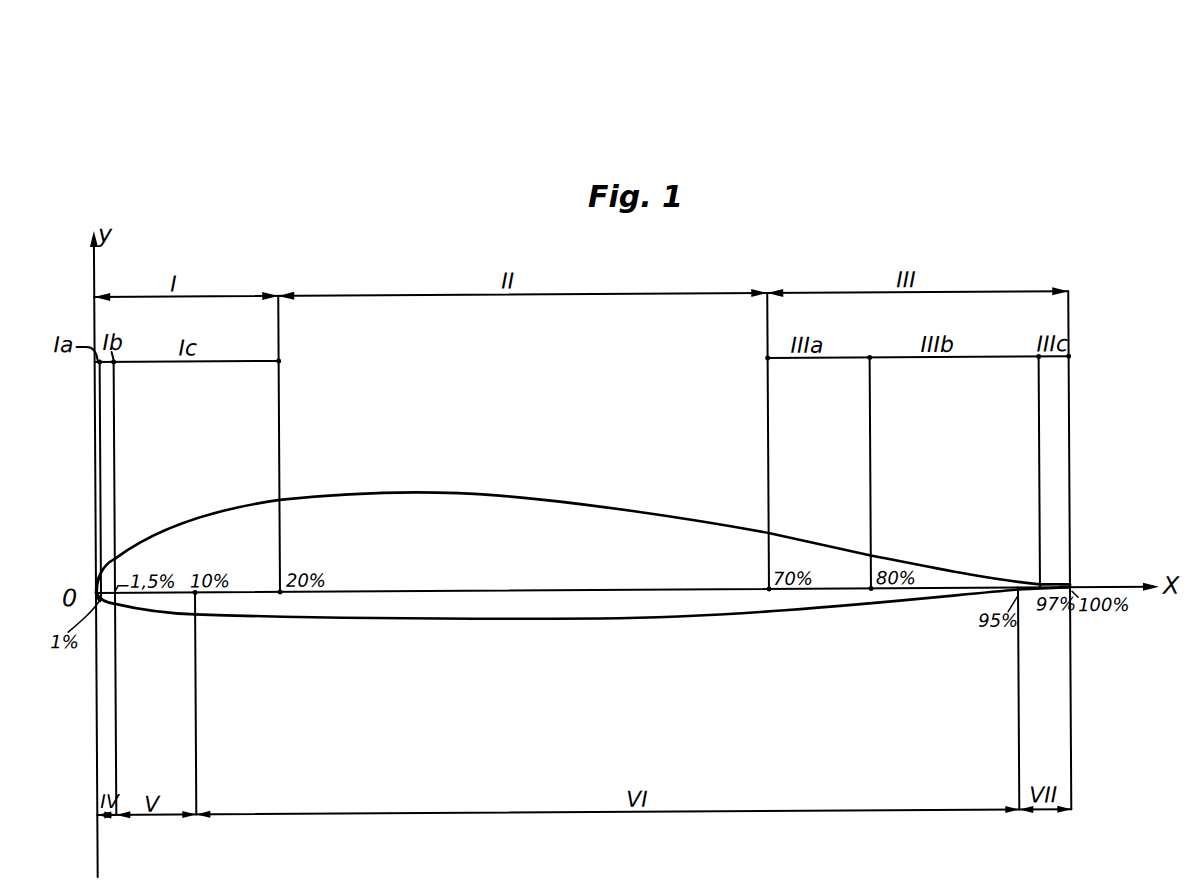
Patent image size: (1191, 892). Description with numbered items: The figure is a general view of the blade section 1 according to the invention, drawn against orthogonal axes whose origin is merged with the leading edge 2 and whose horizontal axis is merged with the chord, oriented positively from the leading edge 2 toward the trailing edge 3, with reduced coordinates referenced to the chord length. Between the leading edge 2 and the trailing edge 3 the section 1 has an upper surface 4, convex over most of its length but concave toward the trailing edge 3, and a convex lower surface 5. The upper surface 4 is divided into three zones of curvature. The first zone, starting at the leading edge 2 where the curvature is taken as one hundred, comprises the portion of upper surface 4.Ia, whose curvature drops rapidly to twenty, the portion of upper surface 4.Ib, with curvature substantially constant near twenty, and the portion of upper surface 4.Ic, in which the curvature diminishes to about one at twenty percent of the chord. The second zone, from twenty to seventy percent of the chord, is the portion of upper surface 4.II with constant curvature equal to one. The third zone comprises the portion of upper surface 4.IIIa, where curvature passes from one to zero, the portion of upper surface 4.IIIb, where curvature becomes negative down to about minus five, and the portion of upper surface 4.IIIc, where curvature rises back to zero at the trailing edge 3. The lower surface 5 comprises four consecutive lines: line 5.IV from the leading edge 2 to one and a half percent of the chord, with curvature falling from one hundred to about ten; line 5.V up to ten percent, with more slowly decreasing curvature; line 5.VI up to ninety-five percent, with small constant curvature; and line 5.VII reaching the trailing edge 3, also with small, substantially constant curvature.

The section 1 is at (514, 480).
The leading edge 2 is at (96, 590).
The trailing edge 3 is at (1073, 593).
The upper surface 4 is at (414, 486).
The lower surface 5 is at (468, 632).
The portion of upper surface 4.Ia is at (100, 576).
The portion of upper surface 4.Ib is at (112, 562).
The portion of upper surface 4.Ic is at (190, 515).
The portion of upper surface 4.II is at (470, 500).
The portion of upper surface 4.IIIa is at (806, 545).
The portion of upper surface 4.IIIb is at (937, 571).
The portion of upper surface 4.IIIc is at (1056, 586).
The line of lower surface 5.IV is at (115, 608).
The line of lower surface 5.V is at (151, 622).
The line of lower surface 5.VI is at (383, 623).
The line of lower surface 5.VII is at (1031, 607).